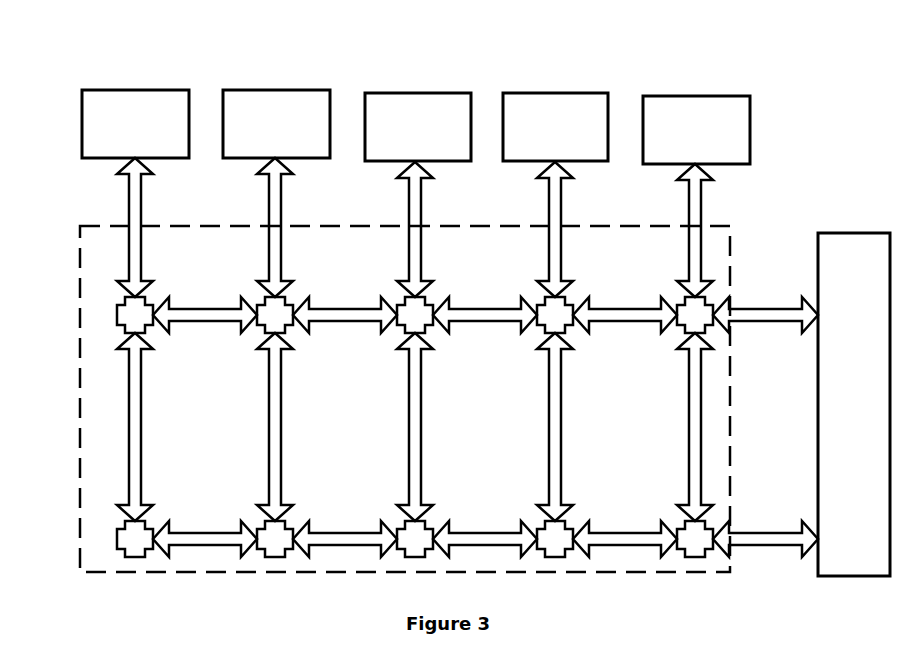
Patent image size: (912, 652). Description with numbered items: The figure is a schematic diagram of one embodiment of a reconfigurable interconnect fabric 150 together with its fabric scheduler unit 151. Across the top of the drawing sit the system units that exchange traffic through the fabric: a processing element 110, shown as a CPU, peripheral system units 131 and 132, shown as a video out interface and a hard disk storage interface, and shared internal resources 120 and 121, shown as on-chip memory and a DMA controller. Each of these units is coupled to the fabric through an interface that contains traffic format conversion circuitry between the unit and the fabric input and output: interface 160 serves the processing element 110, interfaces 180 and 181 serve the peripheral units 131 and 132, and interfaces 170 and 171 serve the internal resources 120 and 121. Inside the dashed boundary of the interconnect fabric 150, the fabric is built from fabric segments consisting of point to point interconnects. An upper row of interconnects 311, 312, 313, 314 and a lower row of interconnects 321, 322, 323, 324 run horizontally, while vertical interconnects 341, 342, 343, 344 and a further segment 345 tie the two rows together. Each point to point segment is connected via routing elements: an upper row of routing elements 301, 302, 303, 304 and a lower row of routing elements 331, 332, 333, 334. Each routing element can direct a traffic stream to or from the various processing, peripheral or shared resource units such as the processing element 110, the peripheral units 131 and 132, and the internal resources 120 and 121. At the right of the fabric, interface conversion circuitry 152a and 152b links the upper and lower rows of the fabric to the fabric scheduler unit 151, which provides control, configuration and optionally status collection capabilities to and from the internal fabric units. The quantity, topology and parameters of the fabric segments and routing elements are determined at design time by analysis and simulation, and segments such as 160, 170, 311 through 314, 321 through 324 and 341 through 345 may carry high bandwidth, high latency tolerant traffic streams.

The processing element 110 is at (137, 90).
The system unit 131 is at (277, 90).
The system unit 132 is at (417, 93).
The internal resource 120 is at (558, 93).
The internal resource 121 is at (697, 96).
The reconfigurable interconnect fabric 150 is at (80, 402).
The fabric scheduler unit 151 is at (855, 233).
The interface conversion circuitry 152a is at (768, 309).
The interface conversion circuitry 152b is at (763, 533).
The interface 160 is at (129, 205).
The interface 180 is at (269, 205).
The interface 181 is at (409, 207).
The interface 170 is at (549, 207).
The interface 171 is at (689, 210).
The routing element 301 is at (692, 317).
The routing element 302 is at (552, 317).
The routing element 303 is at (412, 317).
The routing element 304 is at (272, 317).
The point to point interconnect 311 is at (625, 309).
The point to point interconnect 312 is at (486, 309).
The point to point interconnect 313 is at (345, 309).
The point to point interconnect 314 is at (205, 309).
The point to point interconnect 321 is at (623, 533).
The point to point interconnect 322 is at (486, 533).
The point to point interconnect 323 is at (345, 533).
The point to point interconnect 324 is at (203, 533).
The routing element 331 is at (692, 537).
The routing element 332 is at (552, 537).
The routing element 333 is at (412, 537).
The routing element 334 is at (272, 537).
The point to point interconnect 341 is at (689, 401).
The point to point interconnect 342 is at (549, 398).
The point to point interconnect 343 is at (409, 398).
The point to point interconnect 344 is at (269, 398).
The fabric segment 345 is at (141, 392).